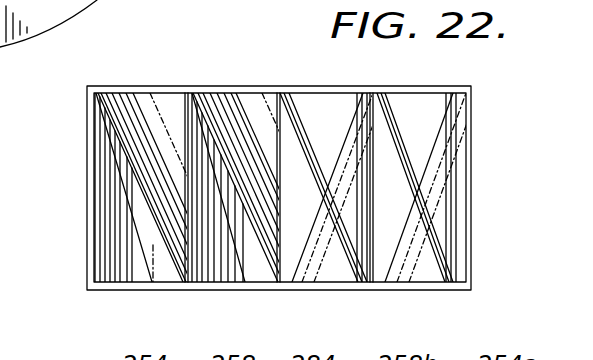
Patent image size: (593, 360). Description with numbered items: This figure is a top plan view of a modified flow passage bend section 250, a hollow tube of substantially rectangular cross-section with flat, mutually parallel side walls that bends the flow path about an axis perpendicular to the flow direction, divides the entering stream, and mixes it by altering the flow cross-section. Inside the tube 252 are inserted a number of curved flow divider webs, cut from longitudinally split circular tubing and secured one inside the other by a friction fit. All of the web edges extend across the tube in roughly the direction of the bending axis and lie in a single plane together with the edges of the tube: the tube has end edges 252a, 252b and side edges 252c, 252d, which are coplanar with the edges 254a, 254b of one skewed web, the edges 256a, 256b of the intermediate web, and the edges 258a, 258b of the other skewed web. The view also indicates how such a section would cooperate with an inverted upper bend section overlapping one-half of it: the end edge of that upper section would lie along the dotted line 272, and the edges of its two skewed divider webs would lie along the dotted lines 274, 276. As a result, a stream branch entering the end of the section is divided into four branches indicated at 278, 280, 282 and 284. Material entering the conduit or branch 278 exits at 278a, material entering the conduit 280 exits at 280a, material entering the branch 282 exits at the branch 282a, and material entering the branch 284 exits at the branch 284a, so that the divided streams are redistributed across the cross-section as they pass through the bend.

The flow bend section 250 is at (188, 73).
The tube 252 is at (110, 196).
The end edge of tube 252a is at (89, 157).
The end edge of tube 252b is at (467, 150).
The side edge of tube 252c is at (297, 287).
The side edge of tube 252d is at (303, 102).
The edge of web 254a is at (110, 129).
The edge of web 254b is at (386, 111).
The edge of web 256a is at (185, 263).
The edge of web 256b is at (375, 258).
The edge of web 258a is at (270, 263).
The edge of web 258b is at (307, 88).
The dotted line 272 is at (277, 335).
The dotted line 274 is at (337, 148).
The dotted line 276 is at (399, 250).
The branch 278 is at (122, 261).
The exit of branch 278a is at (424, 121).
The conduit 280 is at (147, 113).
The exit of conduit 280a is at (409, 248).
The branch 282 is at (228, 265).
The exit branch 282a is at (337, 111).
The branch 284 is at (245, 108).
The exit branch 284a is at (317, 256).